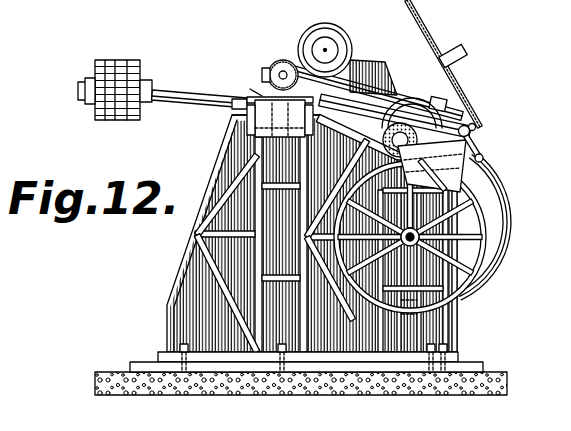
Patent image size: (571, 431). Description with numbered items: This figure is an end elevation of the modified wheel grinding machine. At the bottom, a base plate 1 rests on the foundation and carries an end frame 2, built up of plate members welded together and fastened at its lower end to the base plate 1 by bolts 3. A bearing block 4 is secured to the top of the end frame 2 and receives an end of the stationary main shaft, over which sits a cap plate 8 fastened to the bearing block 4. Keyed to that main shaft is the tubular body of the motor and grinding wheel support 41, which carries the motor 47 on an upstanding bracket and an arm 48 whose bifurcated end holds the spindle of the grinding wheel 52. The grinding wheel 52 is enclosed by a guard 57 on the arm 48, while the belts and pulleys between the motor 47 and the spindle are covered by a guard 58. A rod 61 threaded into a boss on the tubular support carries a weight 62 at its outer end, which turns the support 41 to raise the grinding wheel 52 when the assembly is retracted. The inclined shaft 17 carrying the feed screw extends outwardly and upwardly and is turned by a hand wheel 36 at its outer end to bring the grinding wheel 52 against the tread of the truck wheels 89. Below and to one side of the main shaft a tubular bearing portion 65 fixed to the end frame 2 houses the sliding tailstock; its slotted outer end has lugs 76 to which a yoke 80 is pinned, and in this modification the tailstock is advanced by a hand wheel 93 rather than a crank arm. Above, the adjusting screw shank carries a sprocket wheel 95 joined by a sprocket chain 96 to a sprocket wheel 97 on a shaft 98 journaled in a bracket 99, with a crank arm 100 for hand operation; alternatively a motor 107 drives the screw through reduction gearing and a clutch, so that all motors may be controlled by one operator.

The base plate 1 is at (132, 365).
The end frame 2 is at (168, 291).
The bolts 3 is at (180, 346).
The bearing block 4 is at (252, 120).
The cap plate 8 is at (236, 104).
The shaft 17 is at (432, 62).
The hand wheel 36 is at (462, 56).
The motor and grinding wheel support 41 is at (304, 62).
The motor 47 is at (324, 36).
The arm 48 is at (384, 98).
The grinding wheel 52 is at (420, 114).
The guard 57 is at (446, 102).
The guard 58 is at (374, 80).
The rod 61 is at (190, 102).
The weight 62 is at (95, 108).
The tubular bearing portion 65 is at (486, 193).
The lugs 76 is at (446, 247).
The yoke 80 is at (478, 218).
The wheels 89 is at (484, 252).
The hand wheel 93 is at (486, 290).
The sprocket wheel 95 is at (266, 68).
The sprocket chain 96 is at (452, 116).
The sprocket wheel 97 is at (476, 128).
The shaft 98 is at (470, 134).
The bracket 99 is at (466, 170).
The crank arm 100 is at (483, 155).
The motor 107 is at (262, 92).